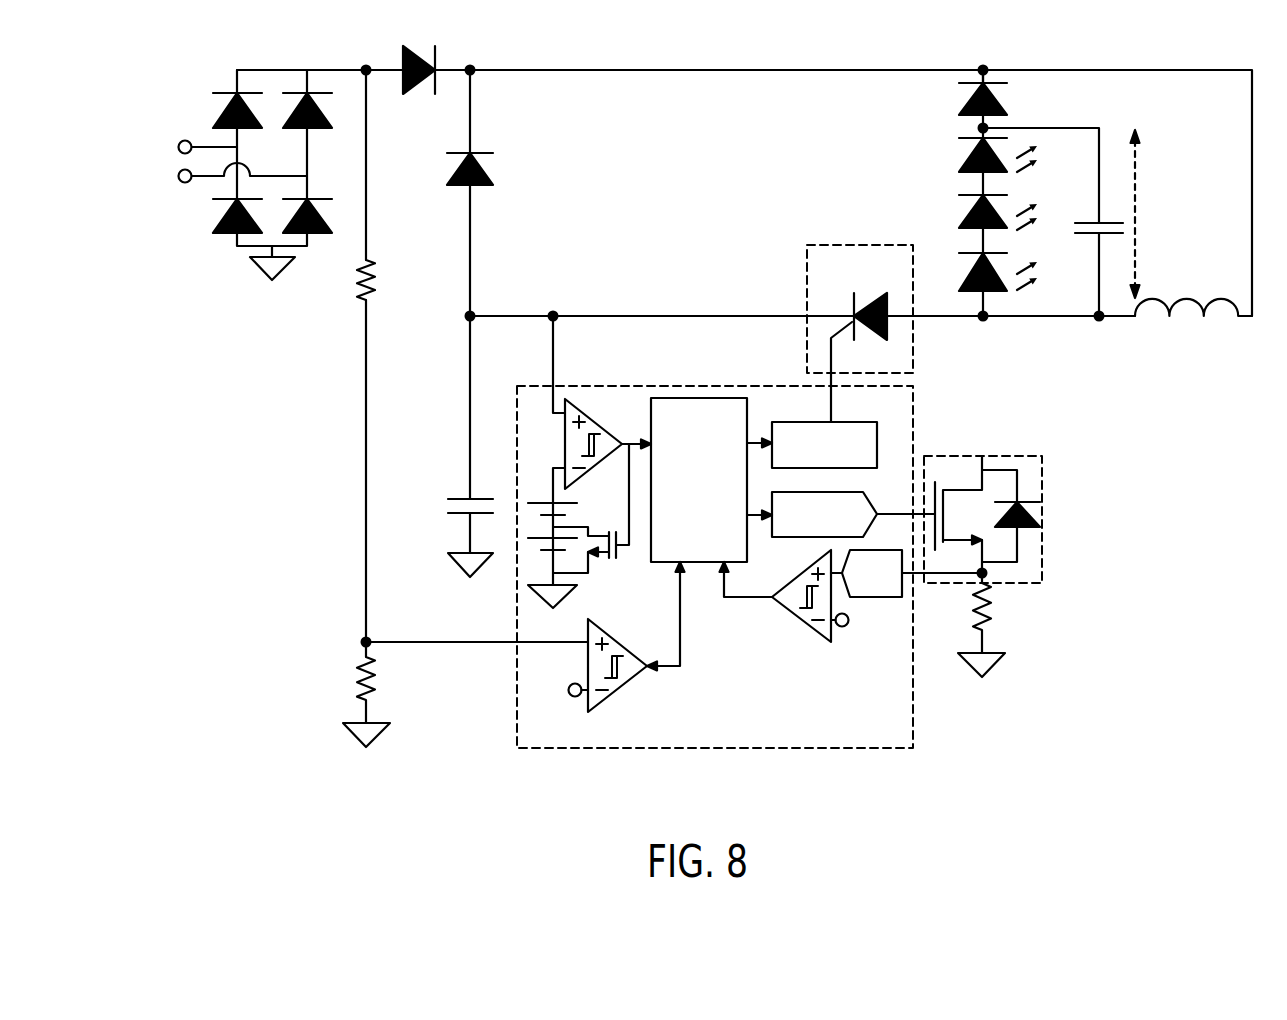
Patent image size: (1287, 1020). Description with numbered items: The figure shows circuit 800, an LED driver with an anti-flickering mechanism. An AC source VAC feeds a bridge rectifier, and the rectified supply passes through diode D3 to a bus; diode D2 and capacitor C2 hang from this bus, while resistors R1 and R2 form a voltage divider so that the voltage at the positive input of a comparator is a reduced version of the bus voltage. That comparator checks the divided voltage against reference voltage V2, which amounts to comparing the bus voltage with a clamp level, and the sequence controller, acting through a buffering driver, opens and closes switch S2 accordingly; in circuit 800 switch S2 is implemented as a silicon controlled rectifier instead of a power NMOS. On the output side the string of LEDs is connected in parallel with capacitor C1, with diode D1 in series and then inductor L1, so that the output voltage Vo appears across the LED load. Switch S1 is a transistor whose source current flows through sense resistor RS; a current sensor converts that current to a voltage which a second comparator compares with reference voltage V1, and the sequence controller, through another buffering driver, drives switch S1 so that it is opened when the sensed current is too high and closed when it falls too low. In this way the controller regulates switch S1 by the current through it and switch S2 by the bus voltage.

The circuit 800 is at (698, 382).
The diode D1 is at (975, 193).
The diode D2 is at (487, 175).
The diode D3 is at (419, 55).
The resistor R1 is at (380, 282).
The resistor R2 is at (374, 694).
The sense resistor RS is at (996, 625).
The capacitor C1 is at (1053, 222).
The capacitor C2 is at (456, 446).
The inductor L1 is at (1193, 331).
The switch S1 is at (997, 521).
The switch S2 is at (860, 317).
The reference voltage V1 is at (824, 596).
The reference voltage V2 is at (506, 665).
The output voltage Vo is at (1151, 214).
The AC input voltage VAC is at (226, 162).